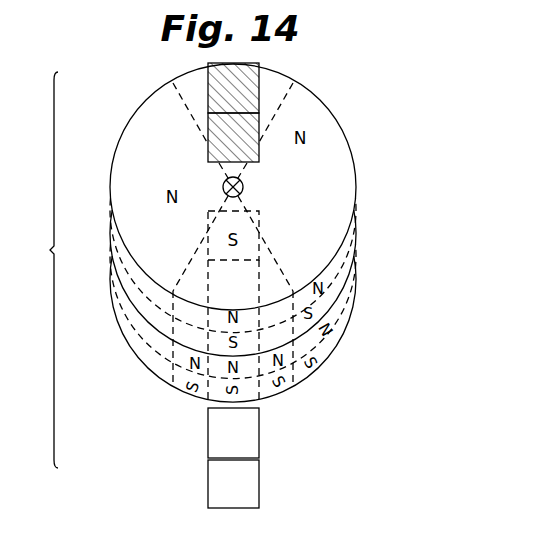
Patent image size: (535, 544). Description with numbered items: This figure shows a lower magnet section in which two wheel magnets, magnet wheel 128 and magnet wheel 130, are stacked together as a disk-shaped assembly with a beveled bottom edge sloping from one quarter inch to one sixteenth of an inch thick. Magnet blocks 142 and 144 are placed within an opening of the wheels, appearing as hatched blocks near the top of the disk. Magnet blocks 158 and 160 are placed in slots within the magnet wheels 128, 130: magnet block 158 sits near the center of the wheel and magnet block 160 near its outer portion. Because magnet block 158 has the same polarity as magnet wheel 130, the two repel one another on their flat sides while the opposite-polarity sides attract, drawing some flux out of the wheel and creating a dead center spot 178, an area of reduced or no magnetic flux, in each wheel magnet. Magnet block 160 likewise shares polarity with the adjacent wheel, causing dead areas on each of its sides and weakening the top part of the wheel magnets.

The magnet wheel 128 is at (233, 187).
The magnet wheel 130 is at (358, 293).
The magnet block 142 is at (233, 137).
The magnet block 144 is at (233, 88).
The magnet block 158 is at (233, 433).
The magnet block 160 is at (233, 484).
The dead center spot 178 is at (243, 224).